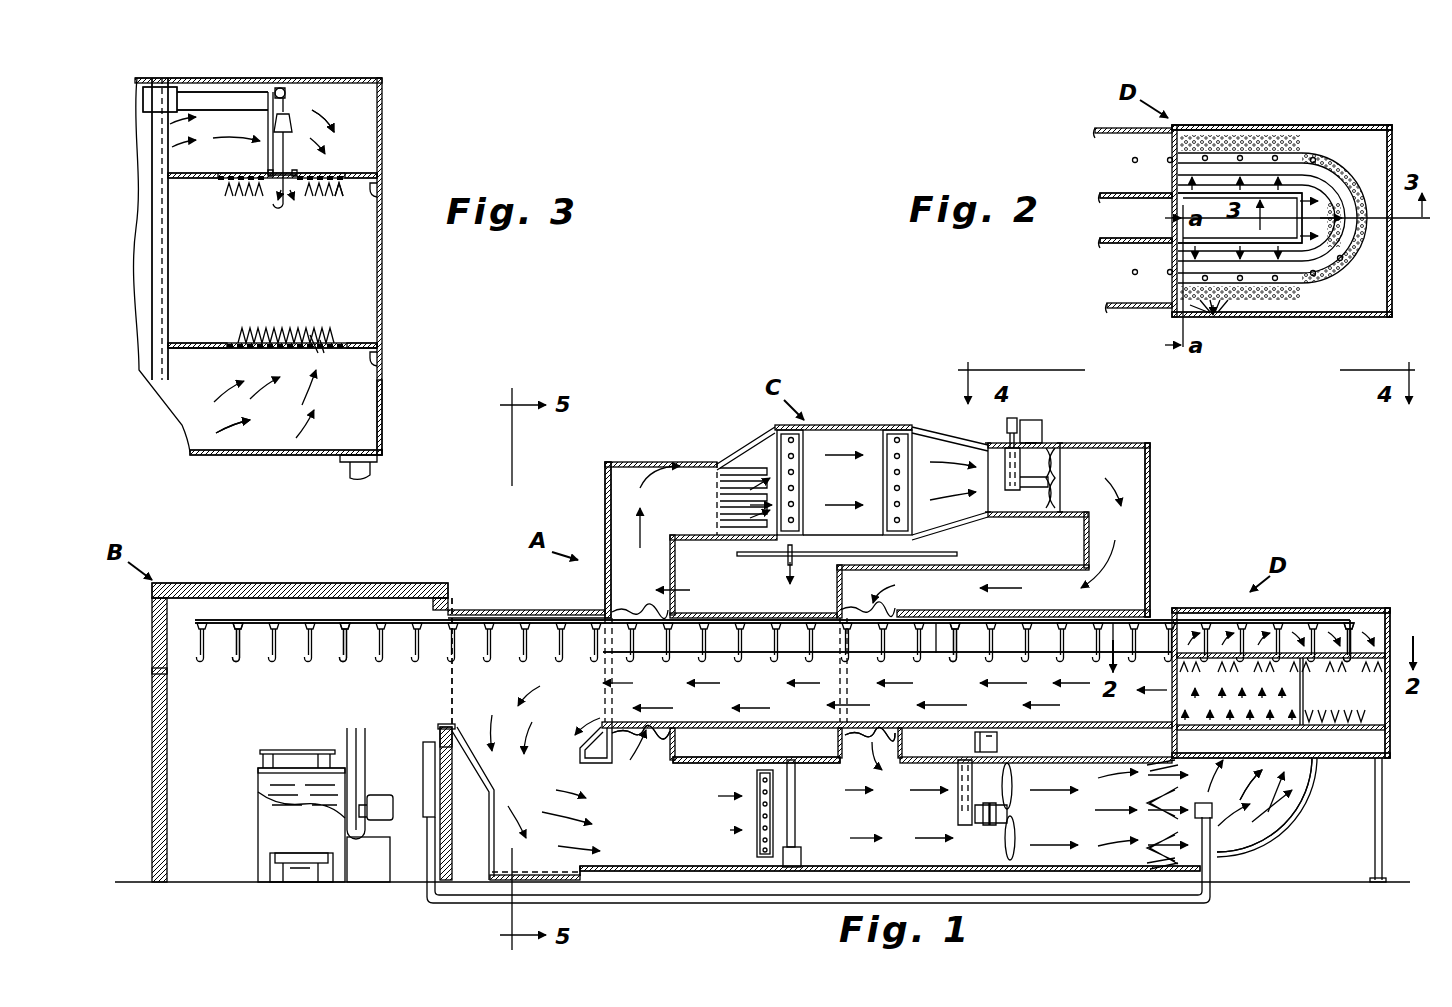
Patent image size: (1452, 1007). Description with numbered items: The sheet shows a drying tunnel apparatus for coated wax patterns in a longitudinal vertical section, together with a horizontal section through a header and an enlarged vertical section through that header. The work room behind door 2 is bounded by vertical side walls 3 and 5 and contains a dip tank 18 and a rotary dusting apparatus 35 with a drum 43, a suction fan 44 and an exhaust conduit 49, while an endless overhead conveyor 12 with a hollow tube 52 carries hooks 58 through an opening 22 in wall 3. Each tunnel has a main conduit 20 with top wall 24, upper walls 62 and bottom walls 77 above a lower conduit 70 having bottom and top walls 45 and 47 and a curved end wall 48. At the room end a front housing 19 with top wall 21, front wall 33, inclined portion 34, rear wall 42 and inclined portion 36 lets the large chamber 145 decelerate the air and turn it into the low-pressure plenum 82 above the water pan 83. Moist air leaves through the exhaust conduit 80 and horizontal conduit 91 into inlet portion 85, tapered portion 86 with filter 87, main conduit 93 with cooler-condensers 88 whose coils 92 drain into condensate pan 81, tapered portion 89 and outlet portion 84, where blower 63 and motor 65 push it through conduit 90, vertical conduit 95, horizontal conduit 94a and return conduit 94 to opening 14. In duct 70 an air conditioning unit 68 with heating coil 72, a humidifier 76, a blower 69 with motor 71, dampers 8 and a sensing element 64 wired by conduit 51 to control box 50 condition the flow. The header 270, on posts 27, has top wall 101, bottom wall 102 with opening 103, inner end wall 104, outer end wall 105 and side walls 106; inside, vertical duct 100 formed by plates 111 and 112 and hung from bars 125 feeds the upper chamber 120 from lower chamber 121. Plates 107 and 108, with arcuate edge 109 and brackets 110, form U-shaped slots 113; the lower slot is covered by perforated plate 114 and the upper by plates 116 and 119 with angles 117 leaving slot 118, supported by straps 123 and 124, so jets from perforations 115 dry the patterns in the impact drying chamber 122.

In FIG. 1, the door 2 is at (152, 772).
In FIG. 1, the vertical side wall 3 is at (442, 738).
In FIG. 1, the vertical side wall 5 is at (152, 612).
In FIG. 1, the pincer-type dampers 8 is at (1150, 755).
In FIG. 1, the endless overhead conveyor 12 is at (252, 585).
In FIG. 1, the discharge opening 14 is at (898, 742).
In FIG. 1, the dip tank 18 is at (258, 824).
In FIG. 1, the front housing 19 is at (522, 603).
In FIG. 1, the main conduit 20 is at (752, 614).
In FIG. 1, the top wall 21 is at (583, 612).
In FIG. 1, the opening 22 is at (452, 706).
In FIG. 1, the top wall 24 is at (940, 638).
In FIG. 3, the vertical posts 27 is at (373, 478).
In FIG. 1, the vertical posts 27 is at (1381, 852).
In FIG. 1, the front wall 33 is at (492, 856).
In FIG. 1, the inclined front wall portion 34 is at (488, 776).
In FIG. 1, the rotary dusting apparatus 35 is at (285, 750).
In FIG. 1, the inclined wall portion 36 is at (580, 740).
In FIG. 1, the rear wall 42 is at (606, 606).
In FIG. 1, the drum 43 is at (302, 754).
In FIG. 1, the suction fan 44 is at (365, 828).
In FIG. 1, the bottom wall 45 is at (684, 866).
In FIG. 1, the top wall 47 is at (726, 762).
In FIG. 1, the curved end wall 48 is at (1282, 827).
In FIG. 1, the exhaust conduit 49 is at (360, 762).
In FIG. 1, the control box 50 is at (425, 776).
In FIG. 1, the metal conduit 51 is at (662, 900).
In FIG. 3, the hollow sheet metal tube 52 is at (234, 90).
In FIG. 1, the hollow sheet metal tube 52 is at (357, 586).
In FIG. 3, the hook 58 is at (292, 208).
In FIG. 2, the hook 58 is at (1133, 160).
In FIG. 1, the hook 58 is at (234, 660).
In FIG. 1, the upper wall 62 is at (975, 653).
In FIG. 1, the blower 63 is at (1053, 463).
In FIG. 1, the sensing element 64 is at (1202, 818).
In FIG. 1, the motor 65 is at (1033, 420).
In FIG. 1, the air conditioning unit 68 is at (764, 756).
In FIG. 1, the blower 69 is at (1020, 802).
In FIG. 1, the lower conduit 70 is at (1020, 870).
In FIG. 1, the electric motor 71 is at (975, 732).
In FIG. 1, the hot-water heating coil 72 is at (758, 825).
In FIG. 1, the humidifier 76 is at (795, 783).
In FIG. 1, the bottom walls 77 is at (720, 726).
In FIG. 1, the vertical exhaust conduit 80 is at (668, 740).
In FIG. 1, the condensate pan 81 is at (818, 540).
In FIG. 1, the low-pressure plenum 82 is at (490, 796).
In FIG. 1, the water pan 83 is at (582, 882).
In FIG. 1, the outlet portion 84 is at (1055, 510).
In FIG. 1, the inlet portion 85 is at (680, 534).
In FIG. 1, the tapered portion 86 is at (755, 440).
In FIG. 1, the filter 87 is at (702, 472).
In FIG. 1, the cooler-condensers 88 is at (803, 483).
In FIG. 1, the tapered portion 89 is at (948, 528).
In FIG. 1, the horizontal connecting conduit 90 is at (1150, 463).
In FIG. 1, the horizontal conduit 91 is at (605, 522).
In FIG. 1, the chilled water cooling coils 92 is at (795, 458).
In FIG. 1, the main central conduit 93 is at (882, 425).
In FIG. 1, the vertical return conduit 94 is at (840, 596).
In FIG. 1, the horizontal conduit 94a is at (1008, 568).
In FIG. 1, the short vertical conduit 95 is at (1150, 496).
In FIG. 3, the vertical duct 100 is at (154, 250).
In FIG. 3, the top wall 101 is at (290, 76).
In FIG. 1, the top wall 101 is at (1234, 605).
In FIG. 3, the bottom wall 102 is at (283, 457).
In FIG. 1, the bottom wall 102 is at (1324, 758).
In FIG. 1, the opening 103 is at (1286, 762).
In FIG. 2, the inner end wall 104 is at (1178, 200).
In FIG. 1, the inner end wall 104 is at (1177, 740).
In FIG. 3, the outer end wall 105 is at (382, 424).
In FIG. 2, the outer end wall 105 is at (1392, 126).
In FIG. 1, the outer end wall 105 is at (1390, 626).
In FIG. 2, the side walls 106 is at (1266, 125).
In FIG. 3, the inner horizontal plate 107 is at (168, 175).
In FIG. 2, the inner horizontal plate 107 is at (1178, 237).
In FIG. 1, the inner horizontal plate 107 is at (1278, 654).
In FIG. 3, the outer horizontal plate 108 is at (370, 174).
In FIG. 2, the outer horizontal plate 108 is at (1238, 124).
In FIG. 2, the arcuate edge 109 is at (1338, 144).
In FIG. 3, the angle brackets 110 is at (373, 197).
In FIG. 3, the vertical plate 111 is at (168, 268).
In FIG. 2, the vertical plates 112 is at (1204, 240).
In FIG. 3, the U-shaped slot 113 is at (223, 175).
In FIG. 1, the U-shaped slot 113 is at (1368, 720).
In FIG. 3, the perforated lower metal plate 114 is at (258, 348).
In FIG. 3, the perforations 115 is at (317, 350).
In FIG. 2, the perforations 115 is at (1210, 320).
In FIG. 3, the perforated plate 116 is at (346, 192).
In FIG. 2, the perforated plate 116 is at (1356, 176).
In FIG. 3, the U-shaped metal angles 117 is at (261, 175).
In FIG. 2, the U-shaped metal angles 117 is at (1205, 158).
In FIG. 3, the slot 118 is at (278, 170).
In FIG. 2, the slot 118 is at (1190, 176).
In FIG. 3, the perforated plate 119 is at (232, 188).
In FIG. 2, the perforated plate 119 is at (1366, 244).
In FIG. 3, the upper chamber 120 is at (382, 114).
In FIG. 1, the upper chamber 120 is at (1376, 600).
In FIG. 3, the lower chamber 121 is at (198, 428).
In FIG. 1, the lower chamber 121 is at (1220, 780).
In FIG. 3, the impact drying chamber 122 is at (275, 268).
In FIG. 3, the vertical strap 123 is at (265, 117).
In FIG. 3, the vertical strap 124 is at (308, 122).
In FIG. 3, the vertical supporting bars 125 is at (152, 140).
In FIG. 1, the air chamber 145 is at (481, 690).
In FIG. 2, the header 270 is at (1387, 322).
In FIG. 1, the header 270 is at (1390, 755).